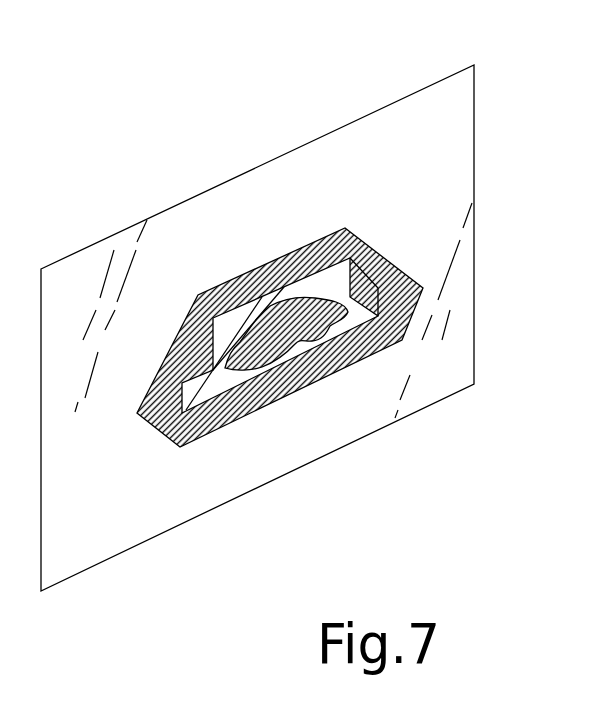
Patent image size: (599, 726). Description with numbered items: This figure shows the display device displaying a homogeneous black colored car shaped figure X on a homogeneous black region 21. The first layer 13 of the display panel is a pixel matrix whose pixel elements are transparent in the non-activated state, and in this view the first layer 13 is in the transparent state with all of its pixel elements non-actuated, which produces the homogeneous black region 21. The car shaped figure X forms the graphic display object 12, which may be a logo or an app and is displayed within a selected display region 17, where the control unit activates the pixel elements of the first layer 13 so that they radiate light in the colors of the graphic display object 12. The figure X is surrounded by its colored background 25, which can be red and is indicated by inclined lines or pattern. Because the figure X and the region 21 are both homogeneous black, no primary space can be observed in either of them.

The first layer 13 is at (459, 110).
The homogeneous black region 21 is at (388, 267).
The colored background 25 is at (397, 342).
The graphic display object 12 is at (213, 380).
The display region 17 is at (271, 368).
The car shaped figure X is at (318, 378).